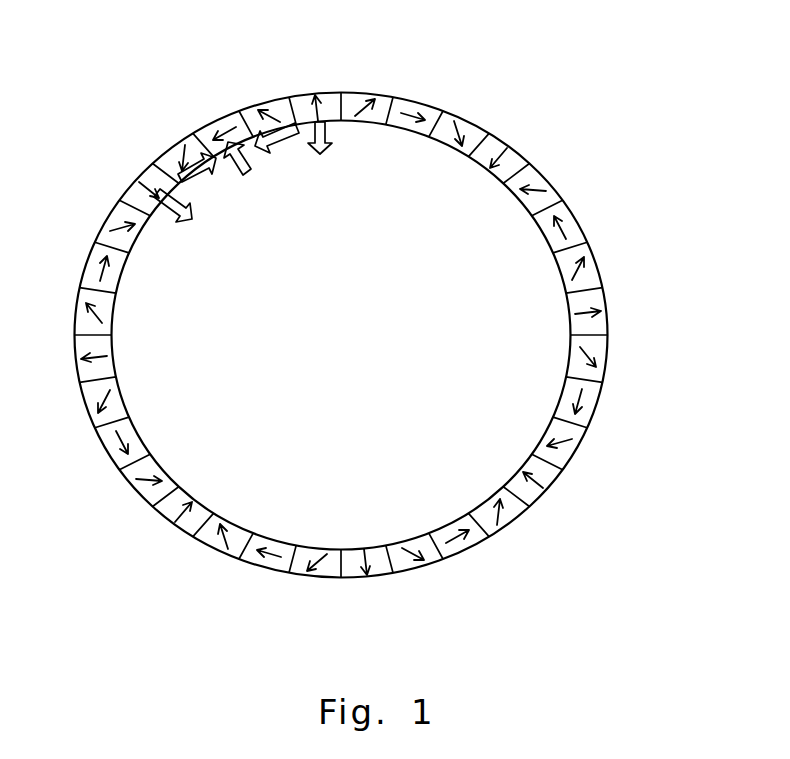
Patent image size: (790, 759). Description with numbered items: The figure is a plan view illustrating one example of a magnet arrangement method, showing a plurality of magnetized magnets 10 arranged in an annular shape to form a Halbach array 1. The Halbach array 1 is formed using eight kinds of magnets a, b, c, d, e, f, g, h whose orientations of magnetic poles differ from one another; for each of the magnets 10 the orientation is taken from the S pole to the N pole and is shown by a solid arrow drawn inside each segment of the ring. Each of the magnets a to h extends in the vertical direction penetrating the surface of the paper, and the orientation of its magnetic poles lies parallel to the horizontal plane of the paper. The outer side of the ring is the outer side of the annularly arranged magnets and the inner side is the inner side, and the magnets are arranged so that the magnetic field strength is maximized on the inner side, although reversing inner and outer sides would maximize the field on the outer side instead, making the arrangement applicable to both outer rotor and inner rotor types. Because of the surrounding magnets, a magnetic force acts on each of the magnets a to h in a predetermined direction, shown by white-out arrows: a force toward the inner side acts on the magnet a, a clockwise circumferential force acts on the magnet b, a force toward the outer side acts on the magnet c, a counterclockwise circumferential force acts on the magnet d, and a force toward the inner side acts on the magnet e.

The Halbach array 1 is at (374, 343).
The magnets 10 is at (341, 362).
The magnet a is at (341, 335).
The magnet b is at (341, 335).
The magnet c is at (341, 335).
The magnet d is at (341, 335).
The magnet e is at (341, 335).
The magnet f is at (341, 335).
The magnet g is at (341, 335).
The magnet h is at (341, 335).